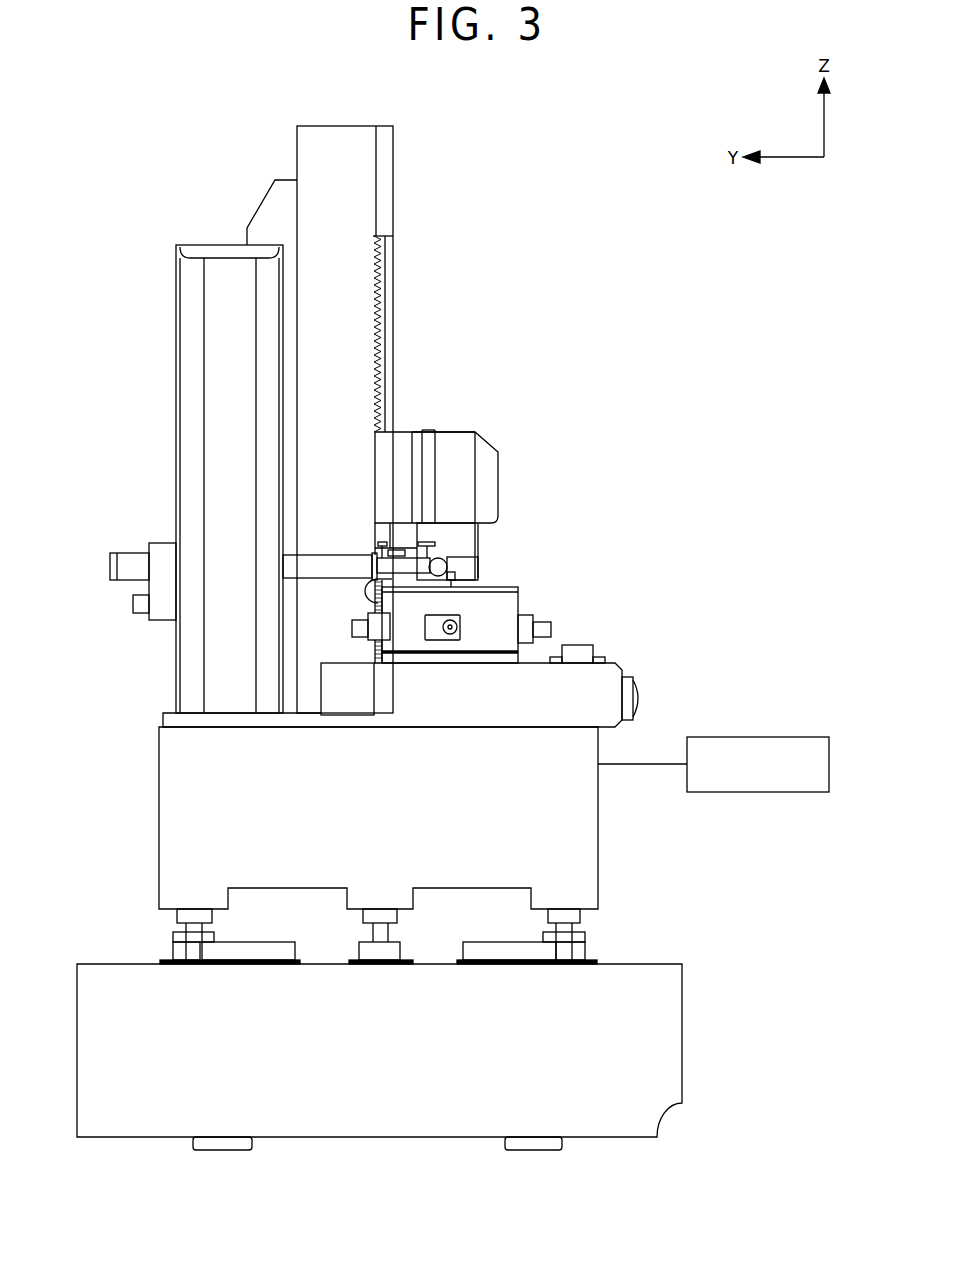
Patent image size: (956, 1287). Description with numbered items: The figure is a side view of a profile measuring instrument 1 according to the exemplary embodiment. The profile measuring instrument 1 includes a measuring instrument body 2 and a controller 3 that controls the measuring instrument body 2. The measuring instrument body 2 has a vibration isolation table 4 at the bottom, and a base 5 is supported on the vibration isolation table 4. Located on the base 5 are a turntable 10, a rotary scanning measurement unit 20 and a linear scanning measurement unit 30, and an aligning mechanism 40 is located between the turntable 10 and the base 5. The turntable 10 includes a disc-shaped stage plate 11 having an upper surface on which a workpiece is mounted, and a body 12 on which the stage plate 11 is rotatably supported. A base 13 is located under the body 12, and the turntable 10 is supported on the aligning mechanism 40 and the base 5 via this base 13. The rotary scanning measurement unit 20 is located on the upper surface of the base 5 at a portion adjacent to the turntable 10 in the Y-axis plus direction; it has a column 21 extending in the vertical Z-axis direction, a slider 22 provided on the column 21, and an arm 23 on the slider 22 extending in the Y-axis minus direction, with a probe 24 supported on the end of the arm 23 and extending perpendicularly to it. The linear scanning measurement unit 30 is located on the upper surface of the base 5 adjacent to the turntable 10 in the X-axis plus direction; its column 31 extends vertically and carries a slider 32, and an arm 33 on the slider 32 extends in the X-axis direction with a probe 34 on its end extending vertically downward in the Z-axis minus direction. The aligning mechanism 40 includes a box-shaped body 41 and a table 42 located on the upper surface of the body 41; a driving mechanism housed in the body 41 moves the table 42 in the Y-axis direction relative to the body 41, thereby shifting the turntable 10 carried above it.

The profile measuring instrument 1 is at (734, 541).
The measuring instrument body 2 is at (618, 658).
The controller 3 is at (780, 737).
The vibration isolation table 4 is at (682, 1021).
The base 5 is at (598, 882).
The turntable 10 is at (525, 586).
The stage plate 11 is at (519, 589).
The body 12 is at (520, 599).
The base 13 is at (499, 660).
The rotary scanning measurement unit 20 is at (176, 499).
The column 21 is at (176, 279).
The slider 22 is at (161, 622).
The arm 23 is at (330, 555).
The probe 24 is at (443, 562).
The linear scanning measurement unit 30 is at (488, 440).
The column 31 is at (394, 148).
The slider 32 is at (452, 432).
The arm 33 is at (455, 560).
The probe 34 is at (453, 580).
The aligning mechanism 40 is at (410, 731).
The body 41 is at (445, 708).
The table 42 is at (352, 662).